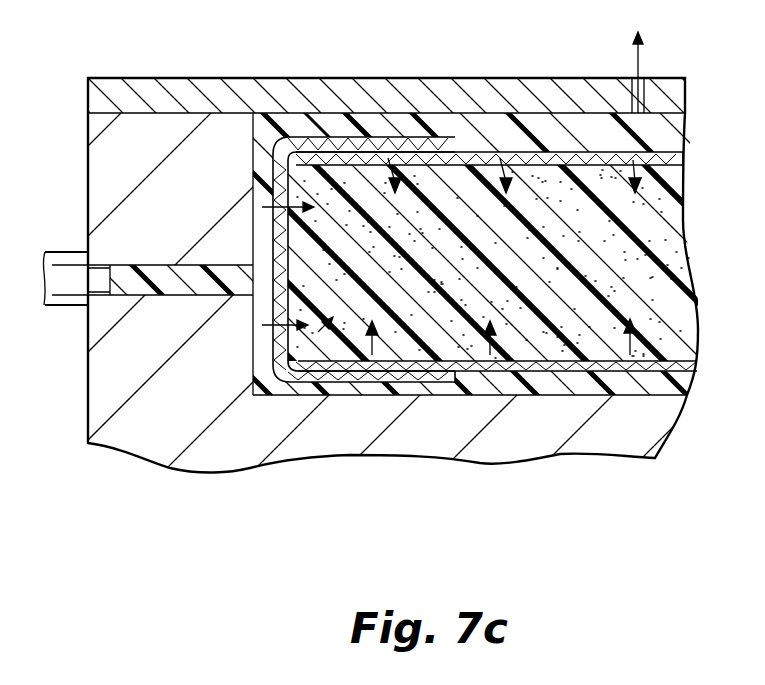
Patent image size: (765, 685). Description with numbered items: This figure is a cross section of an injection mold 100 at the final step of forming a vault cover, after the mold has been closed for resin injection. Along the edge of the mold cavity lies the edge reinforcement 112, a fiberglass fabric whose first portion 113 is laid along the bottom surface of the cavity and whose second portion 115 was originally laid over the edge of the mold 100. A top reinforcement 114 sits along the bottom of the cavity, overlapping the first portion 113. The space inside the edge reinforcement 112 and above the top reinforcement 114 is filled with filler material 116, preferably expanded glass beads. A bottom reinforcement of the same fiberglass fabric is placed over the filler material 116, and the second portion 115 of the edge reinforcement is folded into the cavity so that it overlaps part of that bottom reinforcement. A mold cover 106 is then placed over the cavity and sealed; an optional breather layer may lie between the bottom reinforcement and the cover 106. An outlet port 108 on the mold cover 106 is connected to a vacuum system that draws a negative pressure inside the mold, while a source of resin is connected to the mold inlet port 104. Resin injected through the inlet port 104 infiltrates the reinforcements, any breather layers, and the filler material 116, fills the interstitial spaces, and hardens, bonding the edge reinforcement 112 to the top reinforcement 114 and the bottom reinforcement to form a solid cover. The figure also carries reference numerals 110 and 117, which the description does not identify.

The injection mold 100 is at (82, 162).
The mold inlet port 104 is at (118, 274).
The mold cover 106 is at (115, 86).
The outlet port 108 is at (644, 78).
The upper flow channel layer 110 is at (574, 154).
The edge reinforcement 112 is at (258, 163).
The first portion 113 is at (334, 382).
The top reinforcement 114 is at (646, 372).
The second portion 115 is at (333, 140).
The filler material 116 is at (428, 320).
The lower channel layer 117 is at (508, 382).